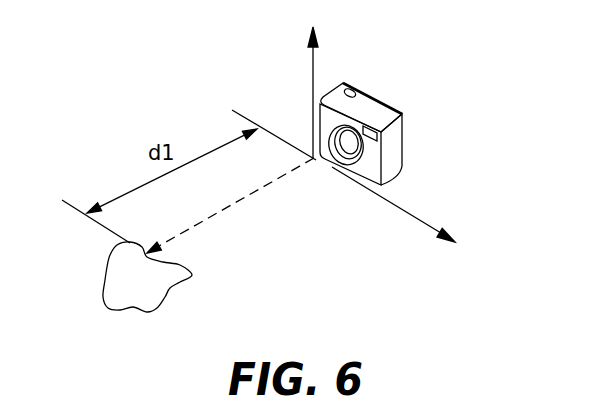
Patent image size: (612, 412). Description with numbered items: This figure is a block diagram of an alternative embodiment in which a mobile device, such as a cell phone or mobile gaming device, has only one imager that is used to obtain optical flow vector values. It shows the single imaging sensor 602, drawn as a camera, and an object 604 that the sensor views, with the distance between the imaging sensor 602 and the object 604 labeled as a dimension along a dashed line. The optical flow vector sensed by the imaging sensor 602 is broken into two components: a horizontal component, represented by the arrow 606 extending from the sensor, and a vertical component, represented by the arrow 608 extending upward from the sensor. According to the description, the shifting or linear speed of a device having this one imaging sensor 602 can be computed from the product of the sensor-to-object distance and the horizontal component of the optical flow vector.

The imaging sensor 602 is at (367, 104).
The object 604 is at (157, 291).
The arrow (horizontal component x1) 606 is at (410, 215).
The arrow (vertical component y1) 608 is at (312, 68).